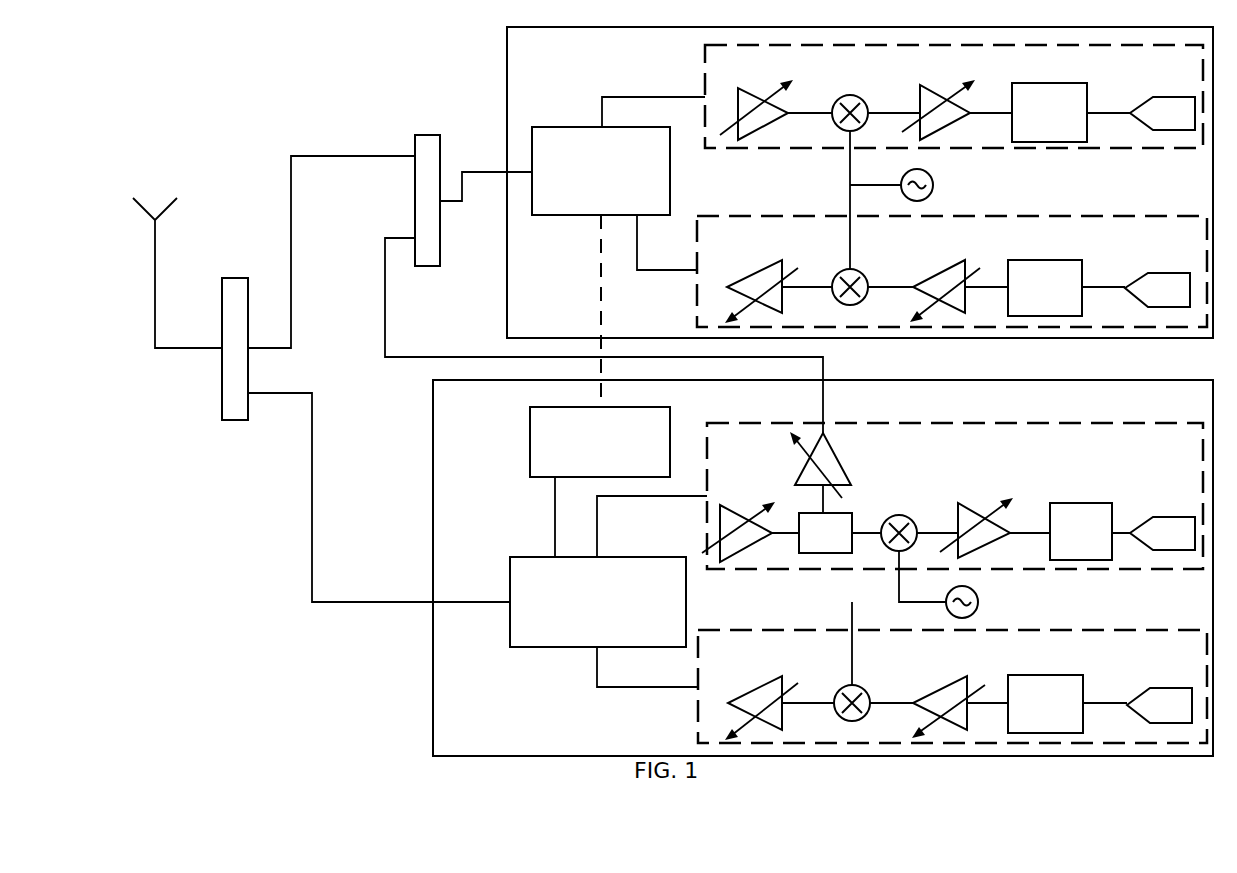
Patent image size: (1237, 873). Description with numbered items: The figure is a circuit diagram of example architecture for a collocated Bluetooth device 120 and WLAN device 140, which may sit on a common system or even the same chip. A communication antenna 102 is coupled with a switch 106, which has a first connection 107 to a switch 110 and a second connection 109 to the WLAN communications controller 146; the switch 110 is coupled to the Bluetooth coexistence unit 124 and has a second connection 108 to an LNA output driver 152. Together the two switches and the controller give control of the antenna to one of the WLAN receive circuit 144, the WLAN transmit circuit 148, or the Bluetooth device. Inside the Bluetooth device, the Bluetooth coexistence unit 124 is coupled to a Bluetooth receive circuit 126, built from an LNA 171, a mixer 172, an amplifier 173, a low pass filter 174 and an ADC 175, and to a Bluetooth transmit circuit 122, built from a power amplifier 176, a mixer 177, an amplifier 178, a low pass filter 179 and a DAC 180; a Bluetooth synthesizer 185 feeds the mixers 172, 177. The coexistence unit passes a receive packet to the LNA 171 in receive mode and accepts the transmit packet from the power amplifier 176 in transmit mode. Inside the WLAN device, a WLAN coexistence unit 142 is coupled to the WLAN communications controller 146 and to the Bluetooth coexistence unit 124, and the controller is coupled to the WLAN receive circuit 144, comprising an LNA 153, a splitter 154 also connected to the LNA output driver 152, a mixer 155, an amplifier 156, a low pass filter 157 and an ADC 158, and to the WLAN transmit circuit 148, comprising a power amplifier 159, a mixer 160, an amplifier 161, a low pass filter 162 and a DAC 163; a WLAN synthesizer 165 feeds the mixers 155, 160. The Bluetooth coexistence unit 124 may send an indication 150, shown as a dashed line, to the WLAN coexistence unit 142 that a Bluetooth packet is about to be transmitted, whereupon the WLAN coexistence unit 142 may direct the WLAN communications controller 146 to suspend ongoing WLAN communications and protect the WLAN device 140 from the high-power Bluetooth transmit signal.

The communication antenna 102 is at (178, 200).
The switch 106 is at (238, 268).
The first connection 107 is at (336, 150).
The second connection 108 is at (426, 354).
The second connection 109 is at (374, 596).
The switch 110 is at (432, 122).
The Bluetooth device 120 is at (500, 48).
The Bluetooth transmit circuit 122 is at (692, 304).
The Bluetooth coexistence unit 124 is at (555, 123).
The Bluetooth receive circuit 126 is at (704, 62).
The WLAN device 140 is at (436, 746).
The WLAN coexistence unit 142 is at (528, 468).
The WLAN receive circuit 144 is at (1134, 436).
The WLAN communications controller 146 is at (568, 650).
The WLAN transmit circuit 148 is at (1158, 627).
The indication 150 is at (606, 371).
The LNA output driver 152 is at (841, 450).
The LNA 153 is at (708, 528).
The splitter 154 is at (818, 558).
The mixer 155 is at (894, 516).
The amplifier 156 is at (975, 516).
The low pass filter 157 is at (1092, 503).
The ADC 158 is at (1181, 514).
The power amplifier 159 is at (758, 691).
The mixer 160 is at (827, 693).
The amplifier 161 is at (970, 733).
The low pass filter 162 is at (1080, 698).
The DAC 163 is at (1160, 687).
The WLAN synthesizer 165 is at (980, 604).
The LNA 171 is at (746, 88).
The mixer 172 is at (827, 98).
The amplifier 173 is at (911, 90).
The low pass filter 174 is at (1068, 92).
The ADC 175 is at (1168, 96).
The power amplifier 176 is at (750, 272).
The mixer 177 is at (827, 259).
The amplifier 178 is at (970, 323).
The low pass filter 179 is at (1070, 282).
The DAC 180 is at (1168, 276).
The Bluetooth synthesizer 185 is at (935, 188).